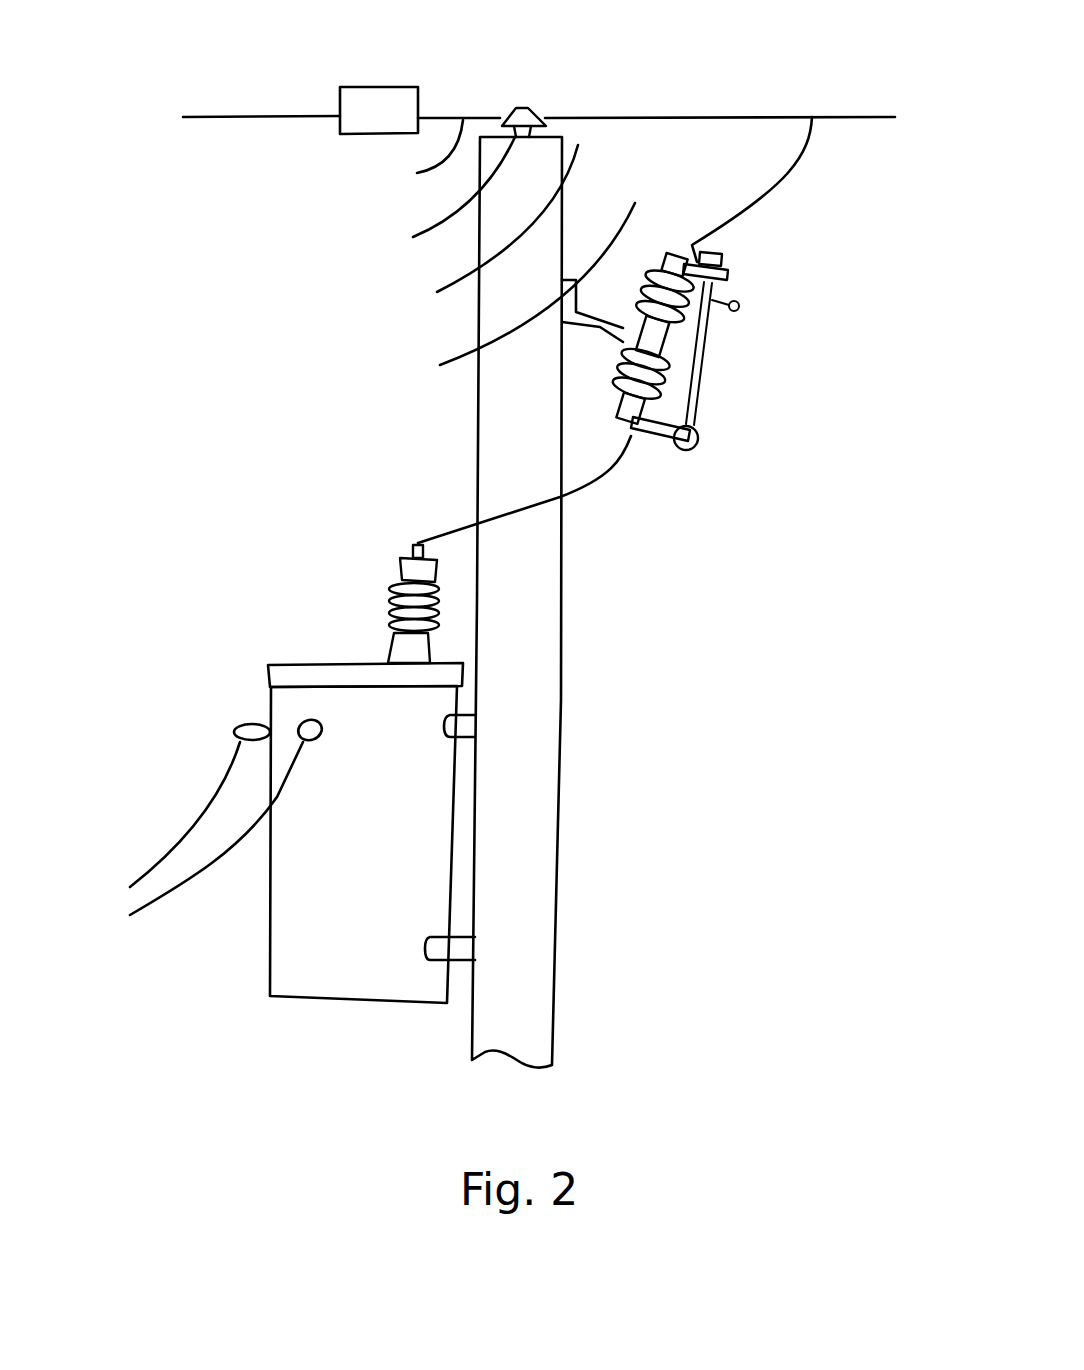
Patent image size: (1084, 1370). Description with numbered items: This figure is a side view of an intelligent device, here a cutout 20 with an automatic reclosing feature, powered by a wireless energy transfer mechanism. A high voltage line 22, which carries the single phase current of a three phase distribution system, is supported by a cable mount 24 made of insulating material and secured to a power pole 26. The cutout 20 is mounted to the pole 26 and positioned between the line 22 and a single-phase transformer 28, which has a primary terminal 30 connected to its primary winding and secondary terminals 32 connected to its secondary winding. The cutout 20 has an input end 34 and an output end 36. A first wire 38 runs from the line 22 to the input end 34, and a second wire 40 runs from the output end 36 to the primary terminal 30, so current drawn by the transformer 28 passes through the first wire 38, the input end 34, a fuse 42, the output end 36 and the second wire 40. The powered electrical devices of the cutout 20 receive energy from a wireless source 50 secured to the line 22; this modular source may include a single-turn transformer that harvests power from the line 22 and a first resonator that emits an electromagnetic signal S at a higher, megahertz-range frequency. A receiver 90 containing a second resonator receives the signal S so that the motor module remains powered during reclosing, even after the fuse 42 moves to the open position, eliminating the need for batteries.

The cutout 20 is at (770, 377).
The high voltage line 22 is at (225, 116).
The cable mount 24 is at (517, 107).
The power pole 26 is at (520, 692).
The single-phase transformer 28 is at (377, 865).
The primary terminal 30 is at (397, 565).
The secondary terminals 32 is at (236, 730).
The input end 34 is at (729, 258).
The output end 36 is at (647, 444).
The first wire 38 is at (803, 148).
The second wire 40 is at (520, 528).
The fuse 42 is at (712, 347).
The wireless source 50 is at (372, 86).
The receiver 90 is at (652, 445).
The electromagnetic signal S is at (429, 264).